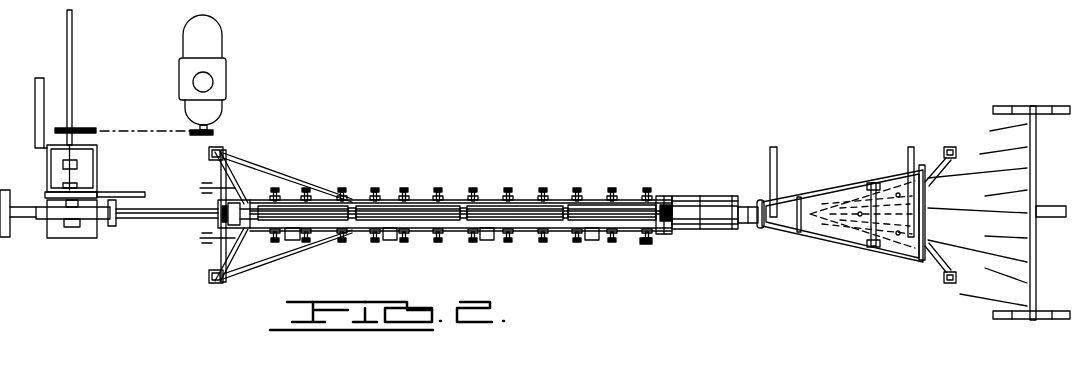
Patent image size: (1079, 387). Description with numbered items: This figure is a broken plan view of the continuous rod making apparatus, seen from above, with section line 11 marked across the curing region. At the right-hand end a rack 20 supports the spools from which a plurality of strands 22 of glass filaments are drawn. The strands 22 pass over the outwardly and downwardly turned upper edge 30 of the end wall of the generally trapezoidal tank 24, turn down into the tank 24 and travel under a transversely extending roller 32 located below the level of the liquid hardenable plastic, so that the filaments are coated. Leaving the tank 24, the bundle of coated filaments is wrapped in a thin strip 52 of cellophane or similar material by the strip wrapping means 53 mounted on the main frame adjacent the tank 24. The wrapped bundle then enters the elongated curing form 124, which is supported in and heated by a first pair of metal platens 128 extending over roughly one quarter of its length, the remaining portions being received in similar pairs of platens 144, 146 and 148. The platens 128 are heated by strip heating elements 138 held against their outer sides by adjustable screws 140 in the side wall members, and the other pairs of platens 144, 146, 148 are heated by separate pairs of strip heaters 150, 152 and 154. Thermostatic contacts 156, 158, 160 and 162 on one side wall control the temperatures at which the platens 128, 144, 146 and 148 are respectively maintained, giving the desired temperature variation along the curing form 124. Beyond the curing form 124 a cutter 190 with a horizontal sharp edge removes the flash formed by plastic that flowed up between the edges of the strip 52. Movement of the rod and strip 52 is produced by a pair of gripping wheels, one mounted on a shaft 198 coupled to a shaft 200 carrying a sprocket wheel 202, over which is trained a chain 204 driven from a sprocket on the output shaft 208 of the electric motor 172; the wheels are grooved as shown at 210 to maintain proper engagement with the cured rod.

The rack 20 is at (1036, 165).
The strands 22 is at (958, 172).
The tank 24 is at (798, 190).
The outwardly and downwardly turned upper edge 30 is at (931, 168).
The roller 32 is at (868, 183).
The strip 52 is at (599, 209).
The strip wrapping means 53 is at (710, 197).
The section line 11- 11 is at (249, 196).
The curing form 124 is at (658, 211).
The platens 128 is at (637, 226).
The strip heating elements 138 is at (619, 204).
The screws 140 is at (478, 205).
The platens 144 is at (525, 206).
The platens 146 is at (425, 204).
The platens 148 is at (286, 205).
The strip heaters 150 is at (528, 230).
The strip heaters 152 is at (418, 235).
The strip heaters 154 is at (322, 205).
The thermostatic contact 156 is at (592, 237).
The thermostatic contact 158 is at (488, 233).
The thermostatic contact 160 is at (392, 242).
The thermostatic contact 162 is at (290, 235).
The electric motor 172 is at (218, 47).
The cutter 190 is at (218, 222).
The shaft 198 is at (78, 182).
The shaft 200 is at (72, 81).
The sprocket wheel 202 is at (62, 128).
The chain 204 is at (152, 132).
The output shaft 208 is at (215, 128).
The grooves 210 is at (60, 222).